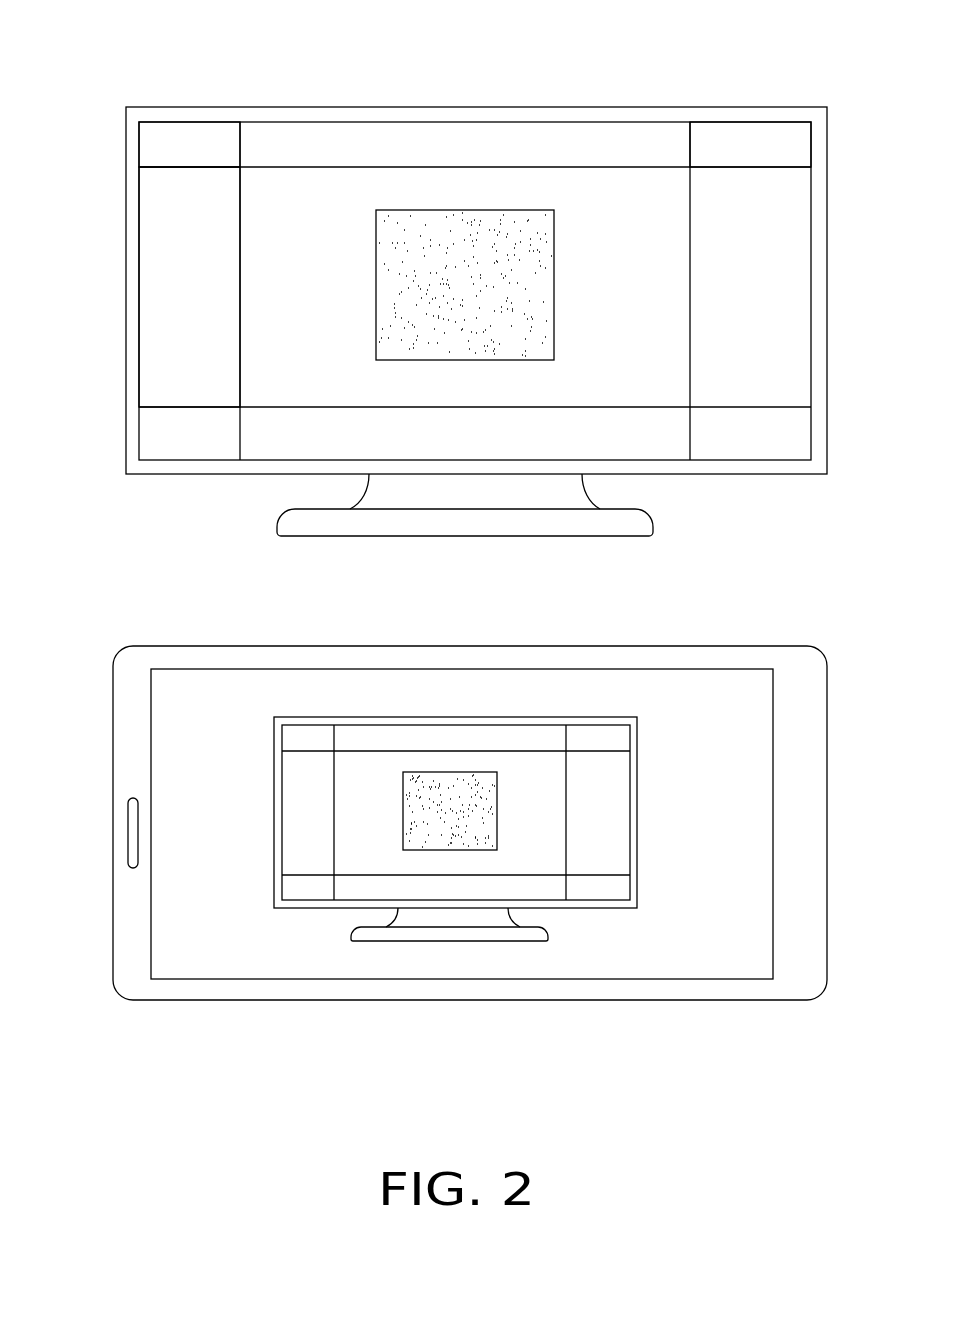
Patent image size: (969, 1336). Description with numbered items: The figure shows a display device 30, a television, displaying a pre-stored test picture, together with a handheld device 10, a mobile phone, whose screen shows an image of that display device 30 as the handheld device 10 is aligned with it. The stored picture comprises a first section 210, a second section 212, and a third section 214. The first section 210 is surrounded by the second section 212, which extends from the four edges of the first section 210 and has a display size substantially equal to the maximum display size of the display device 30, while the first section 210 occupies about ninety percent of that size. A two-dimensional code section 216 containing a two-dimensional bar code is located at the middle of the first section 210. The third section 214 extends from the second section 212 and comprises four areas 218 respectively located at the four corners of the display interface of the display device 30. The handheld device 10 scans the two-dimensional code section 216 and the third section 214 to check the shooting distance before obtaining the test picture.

The handheld device 10 is at (736, 620).
The display device 30 is at (124, 80).
The first section 210 is at (381, 190).
The second section 212 is at (198, 254).
The third section 214 is at (198, 144).
The two-dimensional code section 216 is at (500, 245).
The areas 218 is at (740, 143).